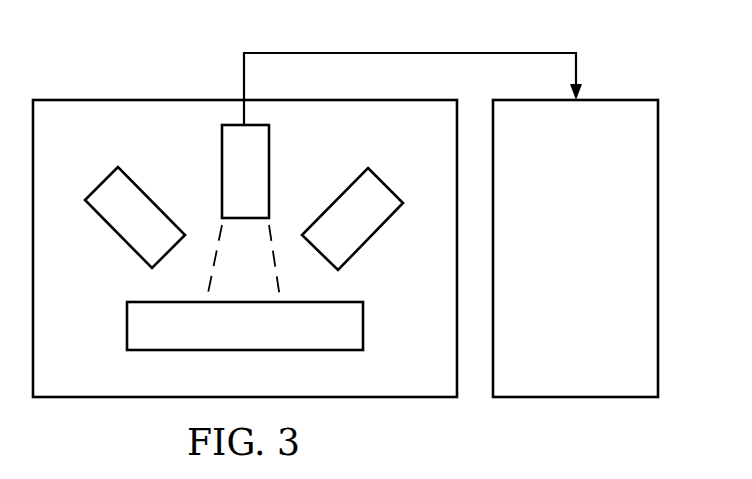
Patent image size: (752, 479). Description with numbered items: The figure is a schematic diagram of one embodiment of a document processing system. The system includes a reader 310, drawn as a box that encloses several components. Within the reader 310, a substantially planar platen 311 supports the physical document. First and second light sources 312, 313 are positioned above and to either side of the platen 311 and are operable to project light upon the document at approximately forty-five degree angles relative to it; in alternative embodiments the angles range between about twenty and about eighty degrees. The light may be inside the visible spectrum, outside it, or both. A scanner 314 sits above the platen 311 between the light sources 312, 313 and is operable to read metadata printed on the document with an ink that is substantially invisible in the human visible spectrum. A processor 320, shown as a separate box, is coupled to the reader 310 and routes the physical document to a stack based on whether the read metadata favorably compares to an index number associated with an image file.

The reader 310 is at (147, 92).
The platen 311 is at (127, 325).
The first light source 312 is at (102, 183).
The second light source 313 is at (418, 172).
The scanner 314 is at (222, 173).
The processor 320 is at (658, 250).